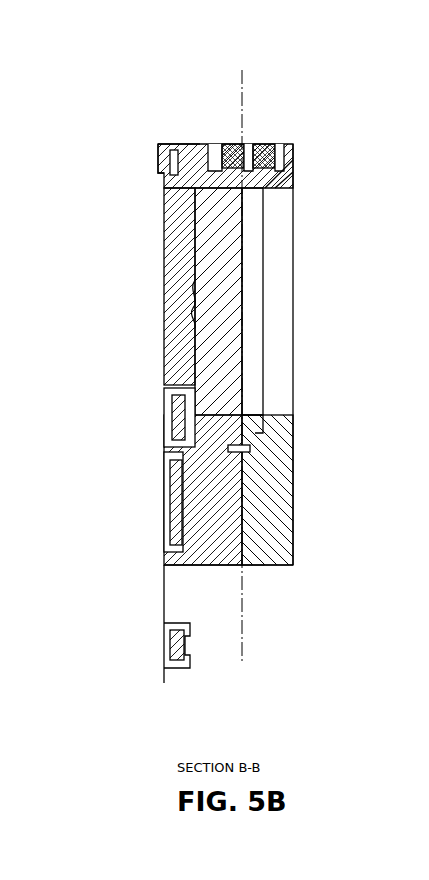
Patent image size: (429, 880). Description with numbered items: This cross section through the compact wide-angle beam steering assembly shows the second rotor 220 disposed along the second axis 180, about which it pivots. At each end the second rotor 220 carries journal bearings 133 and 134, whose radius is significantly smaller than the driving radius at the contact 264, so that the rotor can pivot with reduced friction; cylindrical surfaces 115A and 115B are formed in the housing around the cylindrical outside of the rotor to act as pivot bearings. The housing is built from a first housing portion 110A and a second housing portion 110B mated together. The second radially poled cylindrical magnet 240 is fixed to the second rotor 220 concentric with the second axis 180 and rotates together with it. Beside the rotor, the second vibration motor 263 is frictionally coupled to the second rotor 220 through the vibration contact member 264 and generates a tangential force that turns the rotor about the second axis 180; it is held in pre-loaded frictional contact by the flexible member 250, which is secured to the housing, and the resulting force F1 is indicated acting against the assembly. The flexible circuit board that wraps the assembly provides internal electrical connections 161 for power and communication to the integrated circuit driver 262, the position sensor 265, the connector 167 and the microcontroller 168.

The second axis 180 is at (242, 98).
The second radially poled cylindrical magnet 240 is at (265, 145).
The cylindrical surface 115A is at (165, 142).
The position sensor 265 is at (160, 150).
The second vibration motor 263 is at (165, 245).
The force F1 is at (163, 303).
The flexible member 250 is at (165, 333).
The journal bearing 133 is at (262, 190).
The second rotor 220 is at (248, 270).
The vibration contact member 264 is at (195, 312).
The cylindrical surface 115B is at (255, 432).
The journal bearing 134 is at (252, 450).
The integrated circuit driver 262 is at (245, 465).
The microcontroller 168 is at (243, 525).
The second housing portion 110B is at (283, 565).
The first housing portion 110A is at (244, 590).
The internal electrical connections 161 is at (163, 593).
The connector 167 is at (190, 668).